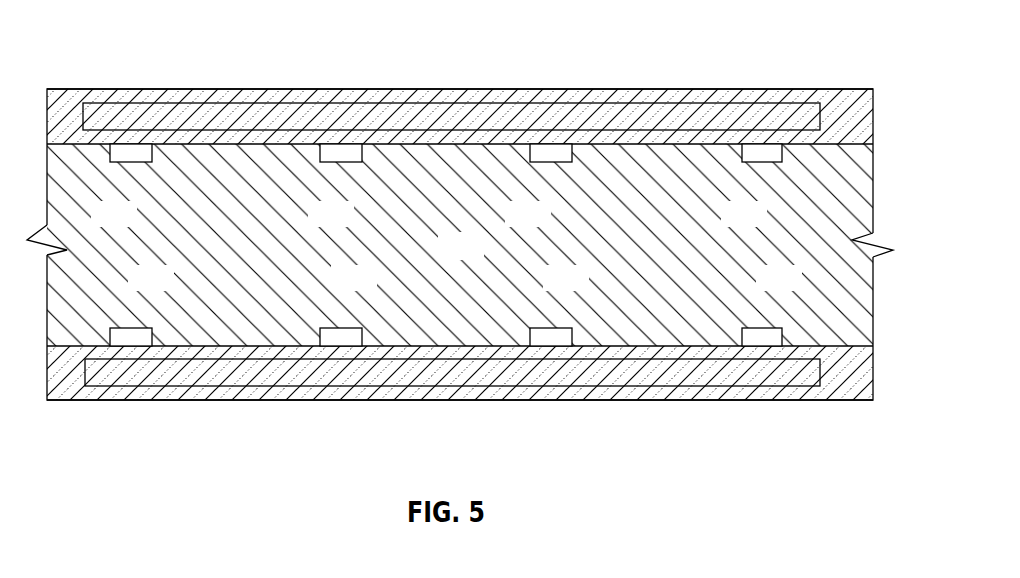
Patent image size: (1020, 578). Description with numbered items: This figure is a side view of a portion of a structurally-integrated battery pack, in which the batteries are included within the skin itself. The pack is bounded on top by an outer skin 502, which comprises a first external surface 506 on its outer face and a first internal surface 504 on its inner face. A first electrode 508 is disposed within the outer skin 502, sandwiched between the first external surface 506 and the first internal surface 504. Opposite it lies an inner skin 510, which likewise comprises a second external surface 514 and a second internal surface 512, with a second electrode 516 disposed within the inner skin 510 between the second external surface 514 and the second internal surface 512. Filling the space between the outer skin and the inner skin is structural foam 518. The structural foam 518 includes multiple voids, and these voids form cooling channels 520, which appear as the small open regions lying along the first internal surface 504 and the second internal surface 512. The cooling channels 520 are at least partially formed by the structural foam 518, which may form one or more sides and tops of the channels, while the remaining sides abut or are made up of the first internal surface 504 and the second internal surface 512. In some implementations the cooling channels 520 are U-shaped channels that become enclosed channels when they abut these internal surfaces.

The outer skin 502 is at (867, 108).
The first internal surface 504 is at (685, 145).
The first external surface 506 is at (697, 89).
The first electrode 508 is at (638, 118).
The inner skin 510 is at (867, 365).
The second internal surface 512 is at (695, 345).
The second external surface 514 is at (650, 402).
The second electrode 516 is at (633, 368).
The structural foam 518 is at (481, 258).
The cooling channels 520 is at (130, 162).